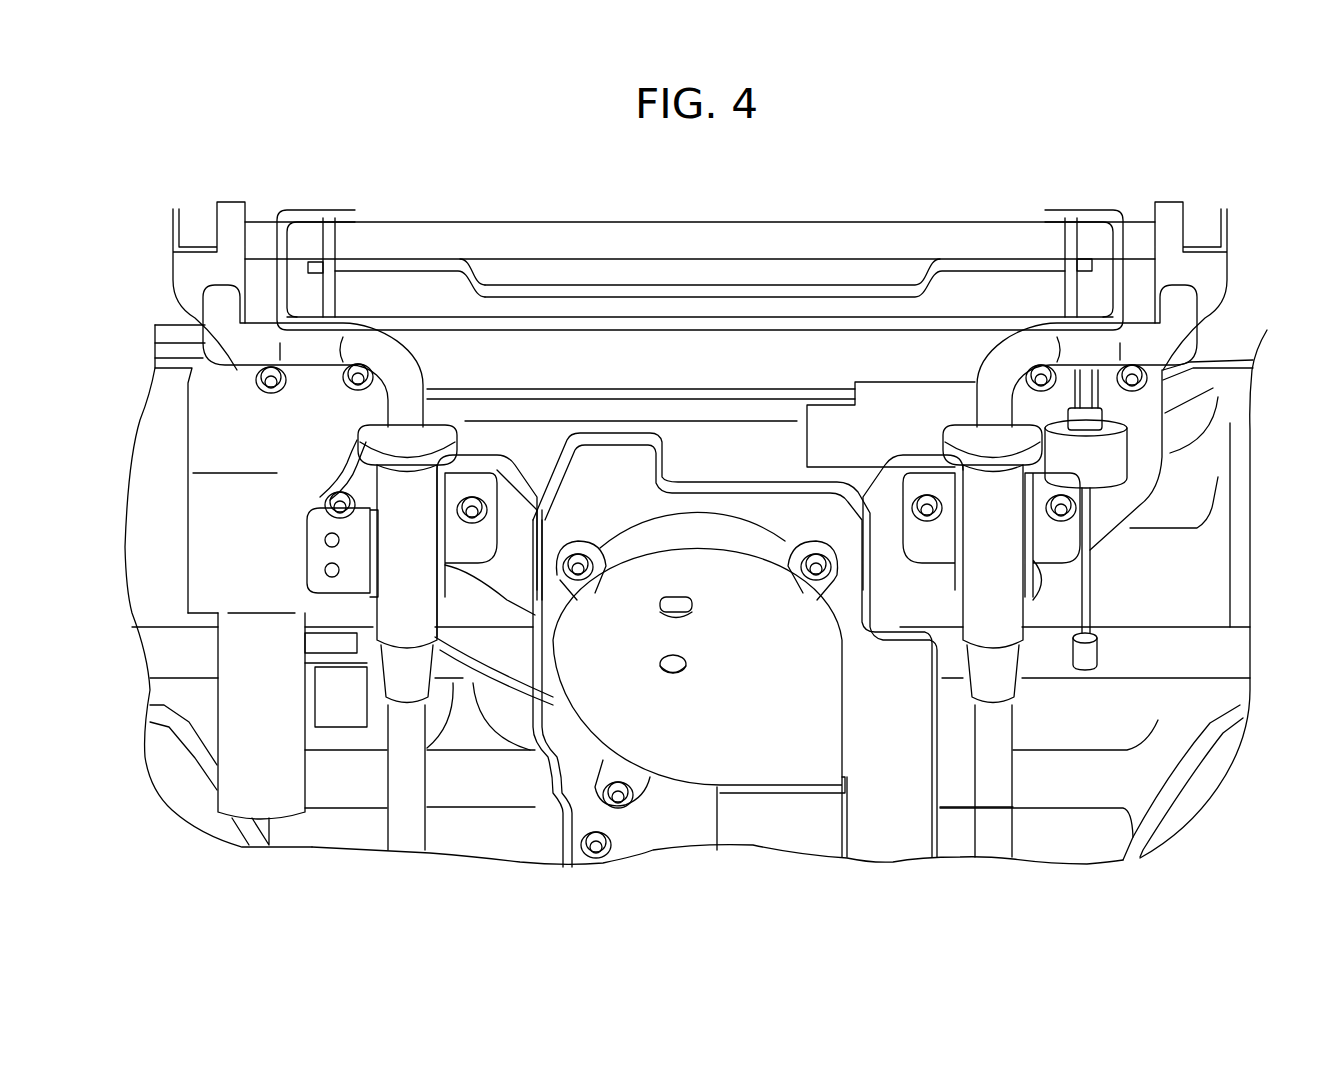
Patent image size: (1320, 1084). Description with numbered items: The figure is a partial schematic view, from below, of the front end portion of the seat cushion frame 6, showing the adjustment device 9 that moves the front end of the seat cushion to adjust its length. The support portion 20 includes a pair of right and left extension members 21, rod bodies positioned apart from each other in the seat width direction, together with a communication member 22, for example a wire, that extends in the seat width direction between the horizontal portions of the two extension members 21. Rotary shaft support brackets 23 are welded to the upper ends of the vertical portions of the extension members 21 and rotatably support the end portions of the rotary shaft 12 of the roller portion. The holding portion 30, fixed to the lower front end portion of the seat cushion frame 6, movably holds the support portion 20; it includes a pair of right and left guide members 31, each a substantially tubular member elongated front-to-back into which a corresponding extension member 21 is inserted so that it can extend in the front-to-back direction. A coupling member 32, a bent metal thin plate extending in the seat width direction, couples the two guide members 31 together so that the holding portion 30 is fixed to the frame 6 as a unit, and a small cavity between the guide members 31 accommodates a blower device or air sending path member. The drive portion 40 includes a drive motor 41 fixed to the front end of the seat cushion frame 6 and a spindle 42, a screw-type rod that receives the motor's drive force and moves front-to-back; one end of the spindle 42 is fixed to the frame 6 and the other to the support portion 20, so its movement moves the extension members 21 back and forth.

The seat cushion frame 6 is at (1234, 338).
The adjustment device 9 is at (1010, 203).
The rotary shaft 12 is at (830, 243).
The support portion 20 is at (186, 309).
The extension member 21 is at (437, 361).
The communication member 22 is at (428, 323).
The rotary shaft support bracket 23 is at (231, 218).
The holding portion 30 is at (376, 777).
The guide member 31 is at (413, 497).
The coupling member 32 is at (513, 575).
The drive portion 40 is at (804, 366).
The drive motor 41 is at (828, 410).
The spindle 42 is at (1090, 592).